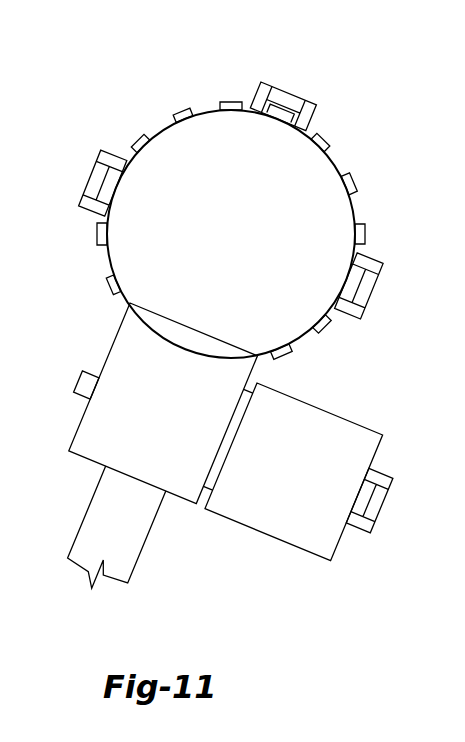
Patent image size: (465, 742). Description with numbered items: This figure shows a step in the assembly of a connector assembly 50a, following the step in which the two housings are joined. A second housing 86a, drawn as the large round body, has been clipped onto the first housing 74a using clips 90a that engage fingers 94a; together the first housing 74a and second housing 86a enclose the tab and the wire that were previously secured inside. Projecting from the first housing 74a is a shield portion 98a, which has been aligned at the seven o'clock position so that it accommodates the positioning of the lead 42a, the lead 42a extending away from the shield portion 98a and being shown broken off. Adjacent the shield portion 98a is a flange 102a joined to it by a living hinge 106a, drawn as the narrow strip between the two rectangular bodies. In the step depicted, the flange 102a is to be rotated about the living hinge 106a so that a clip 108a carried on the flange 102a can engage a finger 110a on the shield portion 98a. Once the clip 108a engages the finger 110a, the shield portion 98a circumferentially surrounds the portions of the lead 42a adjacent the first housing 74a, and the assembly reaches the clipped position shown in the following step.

The connector assembly 50a is at (138, 84).
The first housing 74a is at (359, 182).
The second housing 86a is at (317, 173).
The clips 90a is at (261, 82).
The fingers 94a is at (283, 95).
The shield portion 98a is at (72, 440).
The flange 102a is at (318, 406).
The living hinge 106a is at (205, 494).
The clip 108a is at (382, 511).
The finger 110a is at (76, 379).
The lead 42a is at (138, 563).